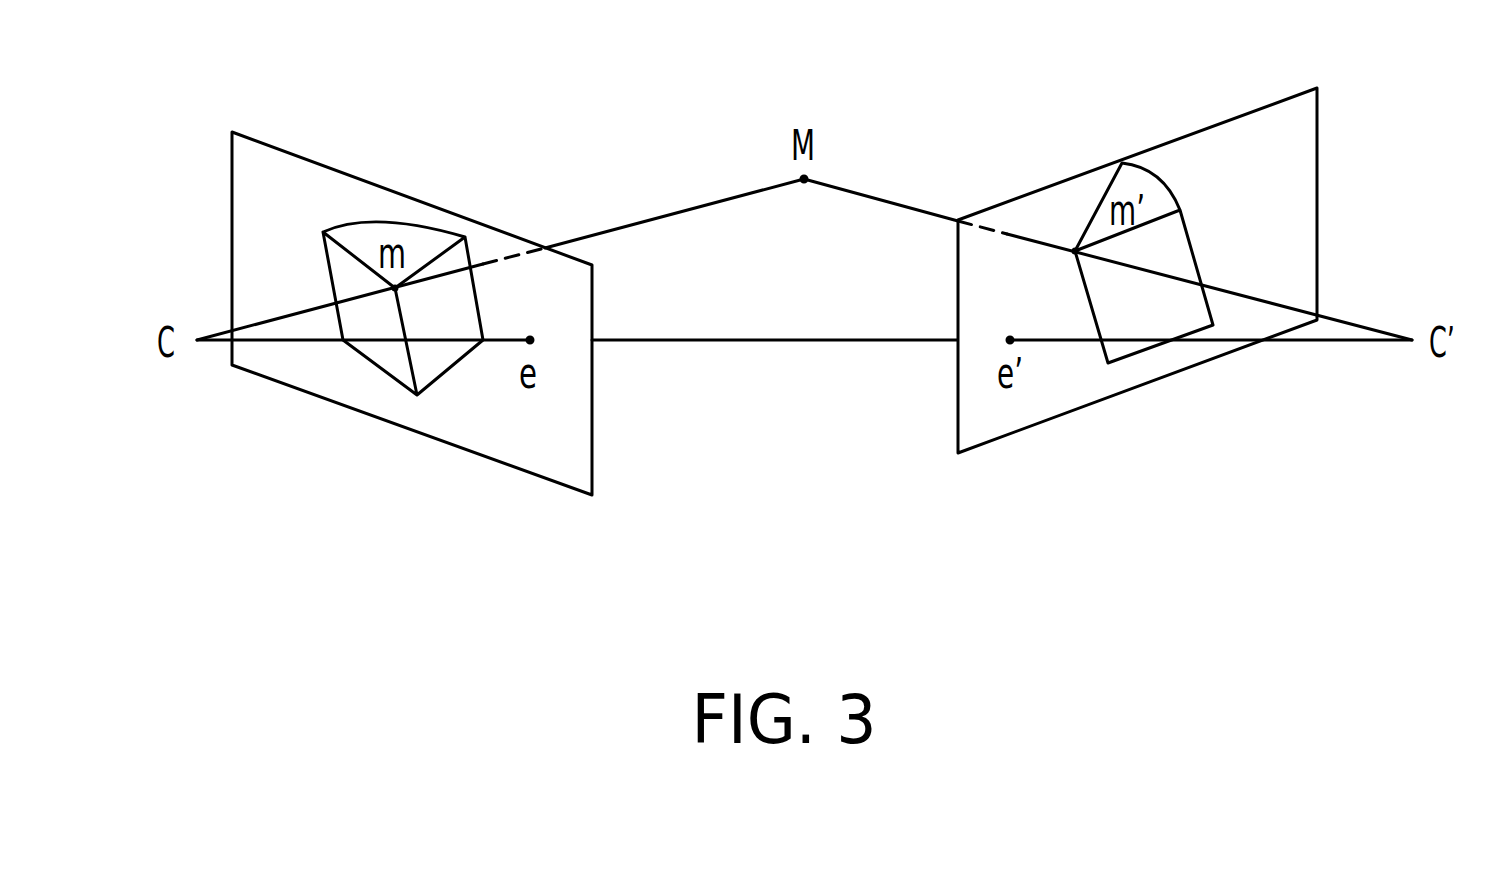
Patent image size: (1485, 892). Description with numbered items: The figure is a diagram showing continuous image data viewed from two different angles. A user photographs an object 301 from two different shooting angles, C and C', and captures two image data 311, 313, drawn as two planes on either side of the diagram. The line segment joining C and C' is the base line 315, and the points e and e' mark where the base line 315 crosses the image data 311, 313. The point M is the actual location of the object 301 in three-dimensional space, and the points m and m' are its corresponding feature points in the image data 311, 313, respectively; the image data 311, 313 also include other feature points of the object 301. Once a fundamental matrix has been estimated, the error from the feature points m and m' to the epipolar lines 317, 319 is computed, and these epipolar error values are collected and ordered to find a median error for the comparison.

The object 301 is at (385, 220).
The image data 311 is at (458, 402).
The image data 313 is at (1168, 358).
The base line 315 is at (772, 342).
The epipolar line 317 is at (452, 268).
The epipolar line 319 is at (1017, 235).